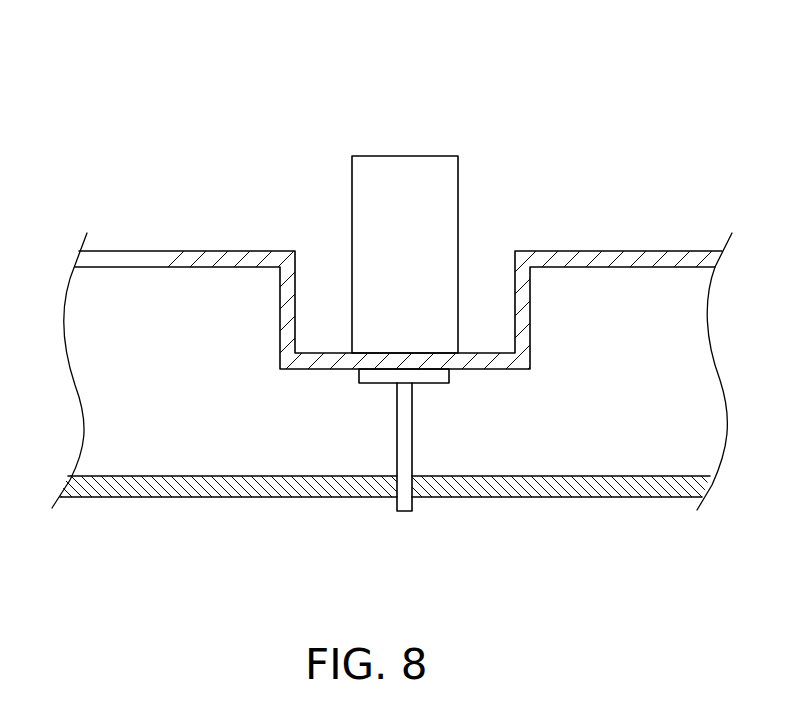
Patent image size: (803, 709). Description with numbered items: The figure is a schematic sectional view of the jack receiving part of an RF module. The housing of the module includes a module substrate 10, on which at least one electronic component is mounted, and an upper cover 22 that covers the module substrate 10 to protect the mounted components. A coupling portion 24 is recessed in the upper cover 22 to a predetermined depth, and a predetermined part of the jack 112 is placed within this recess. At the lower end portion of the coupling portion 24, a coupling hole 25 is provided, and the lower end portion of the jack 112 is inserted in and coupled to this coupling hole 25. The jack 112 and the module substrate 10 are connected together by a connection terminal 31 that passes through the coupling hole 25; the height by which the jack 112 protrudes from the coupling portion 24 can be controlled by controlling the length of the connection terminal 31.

The module substrate 10 is at (683, 497).
The upper cover 22 is at (692, 256).
The coupling portion 24 is at (329, 258).
The coupling hole 25 is at (368, 368).
The connection terminal 31 is at (412, 447).
The jack 112 is at (438, 188).